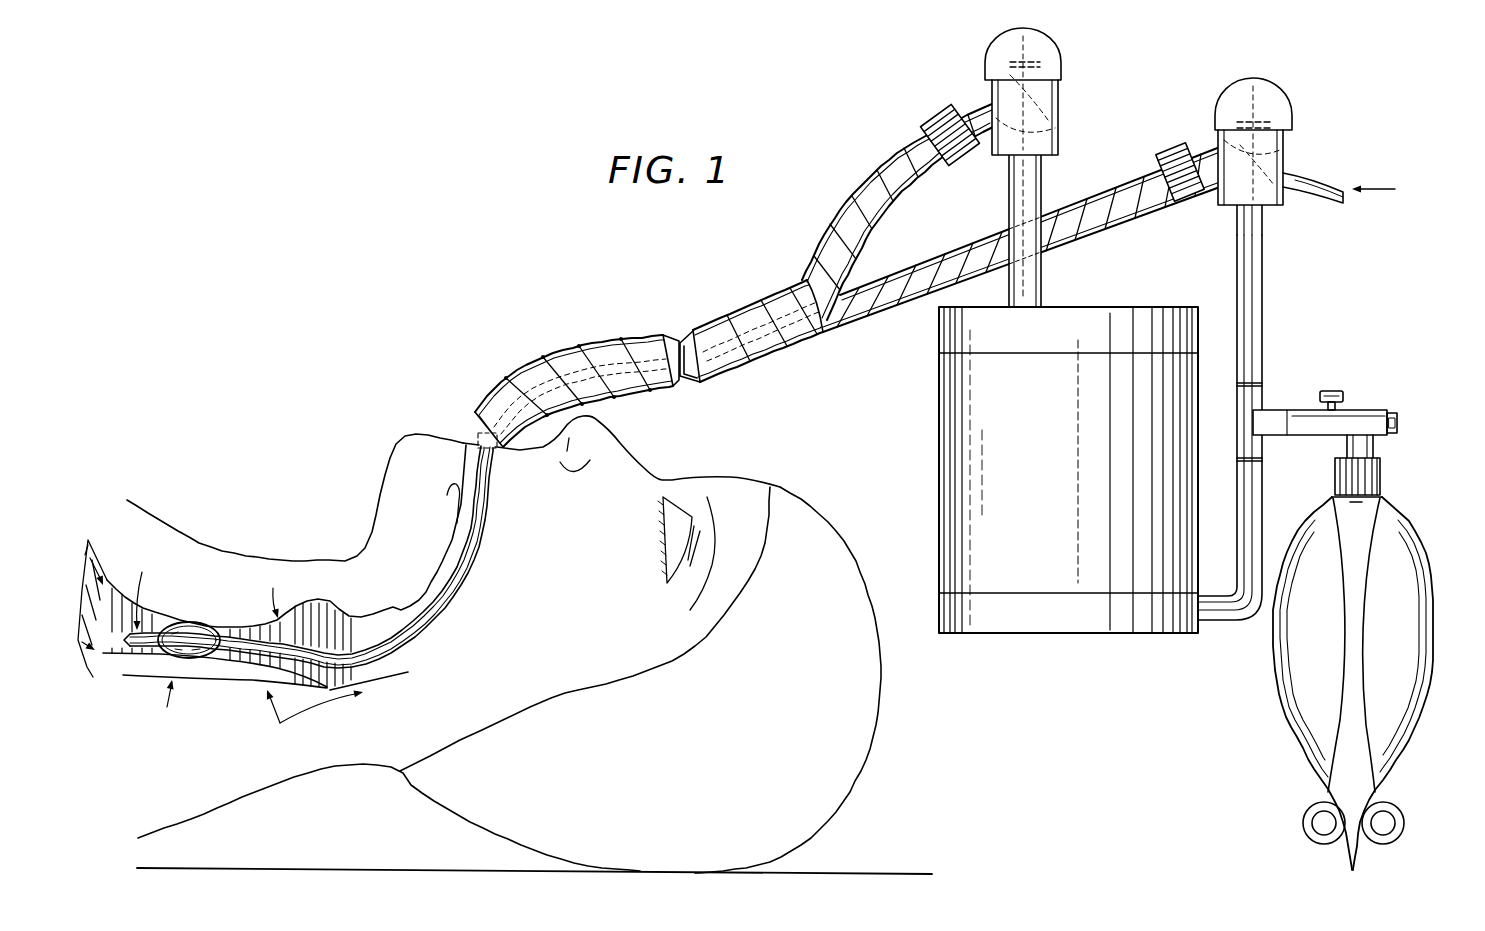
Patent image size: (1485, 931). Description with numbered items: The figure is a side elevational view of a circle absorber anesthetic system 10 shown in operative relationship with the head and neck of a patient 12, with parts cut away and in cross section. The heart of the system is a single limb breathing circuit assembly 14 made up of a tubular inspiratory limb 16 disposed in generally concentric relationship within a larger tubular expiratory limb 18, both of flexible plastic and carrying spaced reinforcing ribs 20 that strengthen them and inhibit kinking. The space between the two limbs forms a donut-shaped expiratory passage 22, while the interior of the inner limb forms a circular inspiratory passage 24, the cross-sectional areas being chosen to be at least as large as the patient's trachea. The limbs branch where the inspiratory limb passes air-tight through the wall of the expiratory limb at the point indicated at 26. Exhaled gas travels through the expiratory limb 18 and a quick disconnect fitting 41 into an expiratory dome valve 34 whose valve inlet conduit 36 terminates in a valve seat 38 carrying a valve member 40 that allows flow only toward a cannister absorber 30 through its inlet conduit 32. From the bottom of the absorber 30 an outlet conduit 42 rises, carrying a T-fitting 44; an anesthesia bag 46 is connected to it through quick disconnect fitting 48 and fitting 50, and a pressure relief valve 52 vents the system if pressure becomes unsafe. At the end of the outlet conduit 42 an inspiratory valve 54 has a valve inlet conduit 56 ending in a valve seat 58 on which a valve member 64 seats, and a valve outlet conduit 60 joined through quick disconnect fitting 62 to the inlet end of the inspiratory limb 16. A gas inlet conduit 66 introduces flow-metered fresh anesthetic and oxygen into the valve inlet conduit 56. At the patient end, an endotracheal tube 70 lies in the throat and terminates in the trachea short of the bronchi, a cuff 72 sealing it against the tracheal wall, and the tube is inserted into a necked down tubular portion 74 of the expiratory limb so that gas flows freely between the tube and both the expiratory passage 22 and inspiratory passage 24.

The circle absorber anesthetic system 10 is at (1192, 62).
The patient 12 is at (360, 508).
The single limb breathing circuit assembly 14 is at (624, 337).
The inspiratory limb 16 is at (683, 340).
The expiratory limb 18 is at (883, 172).
The reinforcing ribs 20 is at (902, 274).
The expiratory passage 22 is at (756, 304).
The inspiratory passage 24 is at (573, 367).
The branching point 26 is at (817, 346).
The cannister absorber 30 is at (938, 557).
The inlet conduit 32 is at (1043, 190).
The dome valve 34 is at (1060, 95).
The valve inlet conduit 36 is at (1058, 131).
The valve seat 38 is at (983, 79).
The valve member 40 is at (1064, 60).
The quick disconnect fitting 41 is at (950, 167).
The outlet conduit 42 is at (1264, 345).
The T-fitting 44 is at (1263, 398).
The anesthesia bag 46 is at (1293, 718).
The quick disconnect fitting 48 is at (1380, 478).
The fitting 50 is at (1377, 411).
The pressure relief valve 52 is at (1339, 391).
The inspiratory valve 54 is at (1293, 125).
The valve inlet conduit 56 is at (1237, 212).
The valve seat 58 is at (1217, 129).
The valve outlet conduit 60 is at (1217, 143).
The quick disconnect fitting 62 is at (1181, 206).
The valve member 64 is at (1292, 101).
The gas inlet conduit 66 is at (1291, 180).
The endotracheal tube 70 is at (479, 438).
The cuff 72 is at (209, 619).
The necked down tubular portion 74 is at (481, 420).